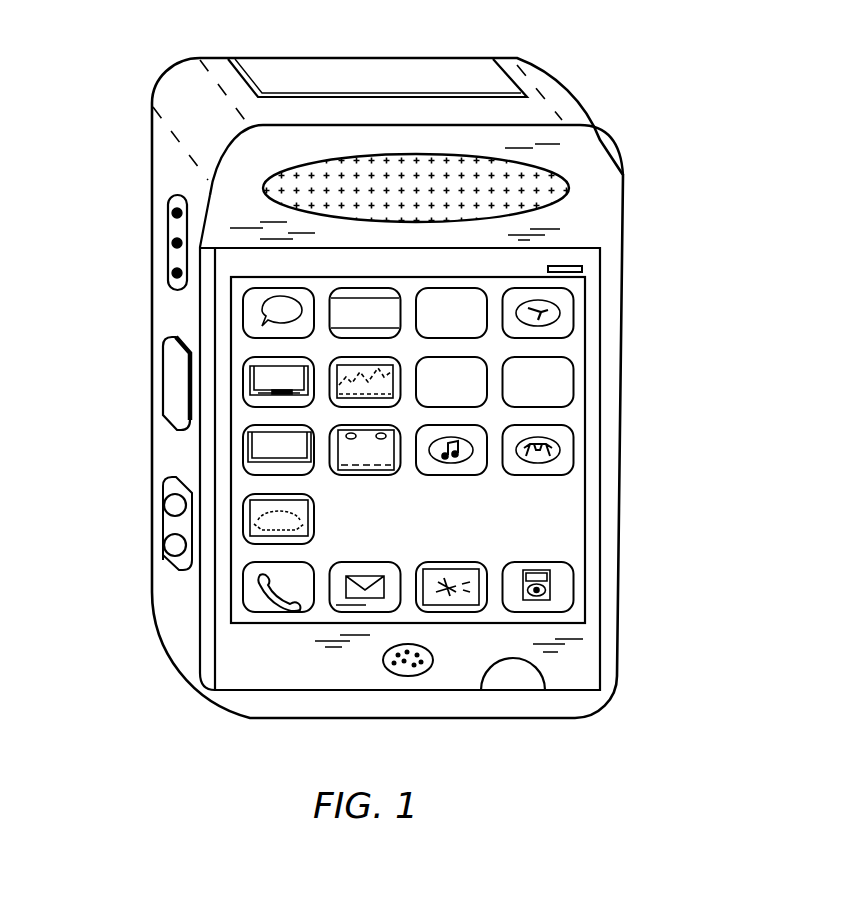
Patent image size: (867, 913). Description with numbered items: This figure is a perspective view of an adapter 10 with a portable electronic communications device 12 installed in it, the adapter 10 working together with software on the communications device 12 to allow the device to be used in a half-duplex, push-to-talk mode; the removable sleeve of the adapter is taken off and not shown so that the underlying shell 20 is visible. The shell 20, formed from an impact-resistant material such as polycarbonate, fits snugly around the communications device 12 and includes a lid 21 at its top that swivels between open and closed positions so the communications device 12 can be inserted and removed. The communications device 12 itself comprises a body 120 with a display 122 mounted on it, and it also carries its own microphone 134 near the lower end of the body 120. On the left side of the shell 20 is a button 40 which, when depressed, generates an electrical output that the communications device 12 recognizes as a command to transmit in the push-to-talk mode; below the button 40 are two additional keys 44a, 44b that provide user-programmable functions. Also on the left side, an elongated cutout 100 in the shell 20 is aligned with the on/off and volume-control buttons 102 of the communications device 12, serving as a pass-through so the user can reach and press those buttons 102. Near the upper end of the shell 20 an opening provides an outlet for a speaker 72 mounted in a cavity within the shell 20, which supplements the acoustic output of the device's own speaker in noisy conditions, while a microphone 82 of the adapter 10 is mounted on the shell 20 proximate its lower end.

The adapter 10 is at (578, 66).
The portable electronic communications device 12 is at (210, 618).
The shell 20 is at (172, 110).
The lid 21 is at (366, 72).
The button 40 is at (172, 362).
The key 44a is at (172, 505).
The key 44b is at (172, 547).
The speaker 72 is at (523, 192).
The microphone 82 is at (512, 680).
The elongated cutout 100 is at (172, 203).
The on/off and volume-control buttons 102 is at (176, 273).
The body 120 is at (297, 672).
The display 122 is at (453, 532).
The microphone 134 is at (388, 677).